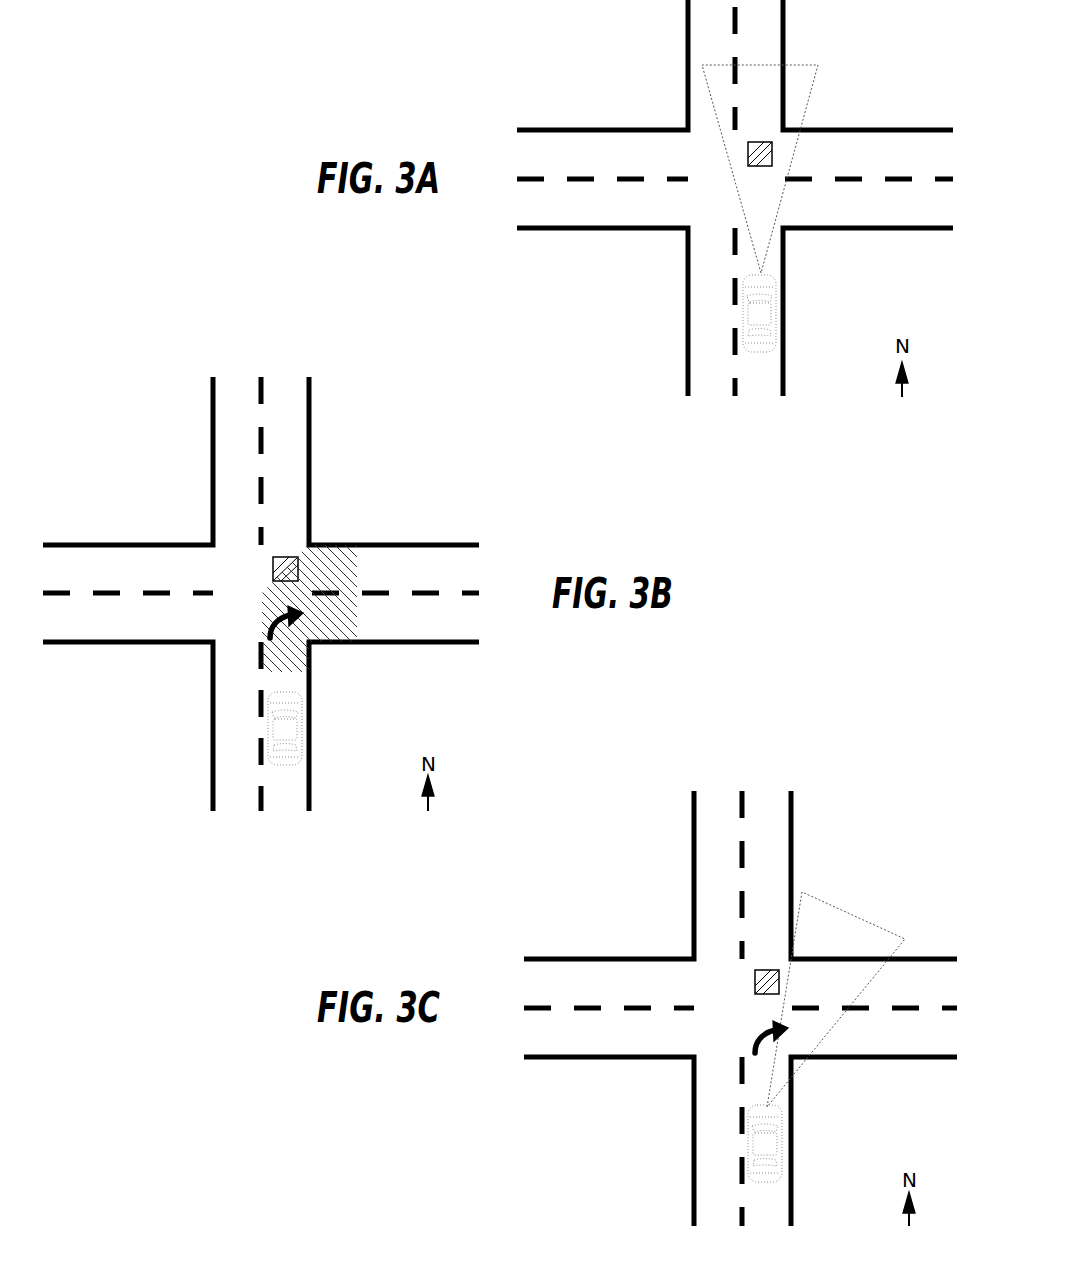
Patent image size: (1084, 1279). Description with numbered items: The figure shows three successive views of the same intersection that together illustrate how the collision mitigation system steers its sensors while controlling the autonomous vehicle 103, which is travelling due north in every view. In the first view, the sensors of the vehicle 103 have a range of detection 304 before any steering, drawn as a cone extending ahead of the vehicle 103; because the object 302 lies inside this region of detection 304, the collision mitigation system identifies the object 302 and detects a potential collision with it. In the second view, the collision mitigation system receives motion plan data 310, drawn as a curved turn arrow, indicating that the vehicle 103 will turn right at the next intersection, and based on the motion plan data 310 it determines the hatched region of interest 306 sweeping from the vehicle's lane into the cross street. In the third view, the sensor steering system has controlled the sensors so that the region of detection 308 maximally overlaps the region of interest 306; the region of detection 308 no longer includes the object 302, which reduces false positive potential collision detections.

In FIG. 3A, the vehicle 103 is at (773, 320).
In FIG. 3B, the vehicle 103 is at (300, 737).
In FIG. 3C, the vehicle 103 is at (780, 1152).
In FIG. 3A, the object 302 is at (772, 153).
In FIG. 3B, the object 302 is at (273, 563).
In FIG. 3C, the object 302 is at (755, 980).
In FIG. 3A, the range of detection 304 is at (805, 80).
In FIG. 3B, the region of interest 306 is at (355, 568).
In FIG. 3C, the region of detection 308 is at (818, 910).
In FIG. 3B, the motion plan data 310 is at (270, 618).
In FIG. 3C, the motion plan data 310 is at (753, 1035).